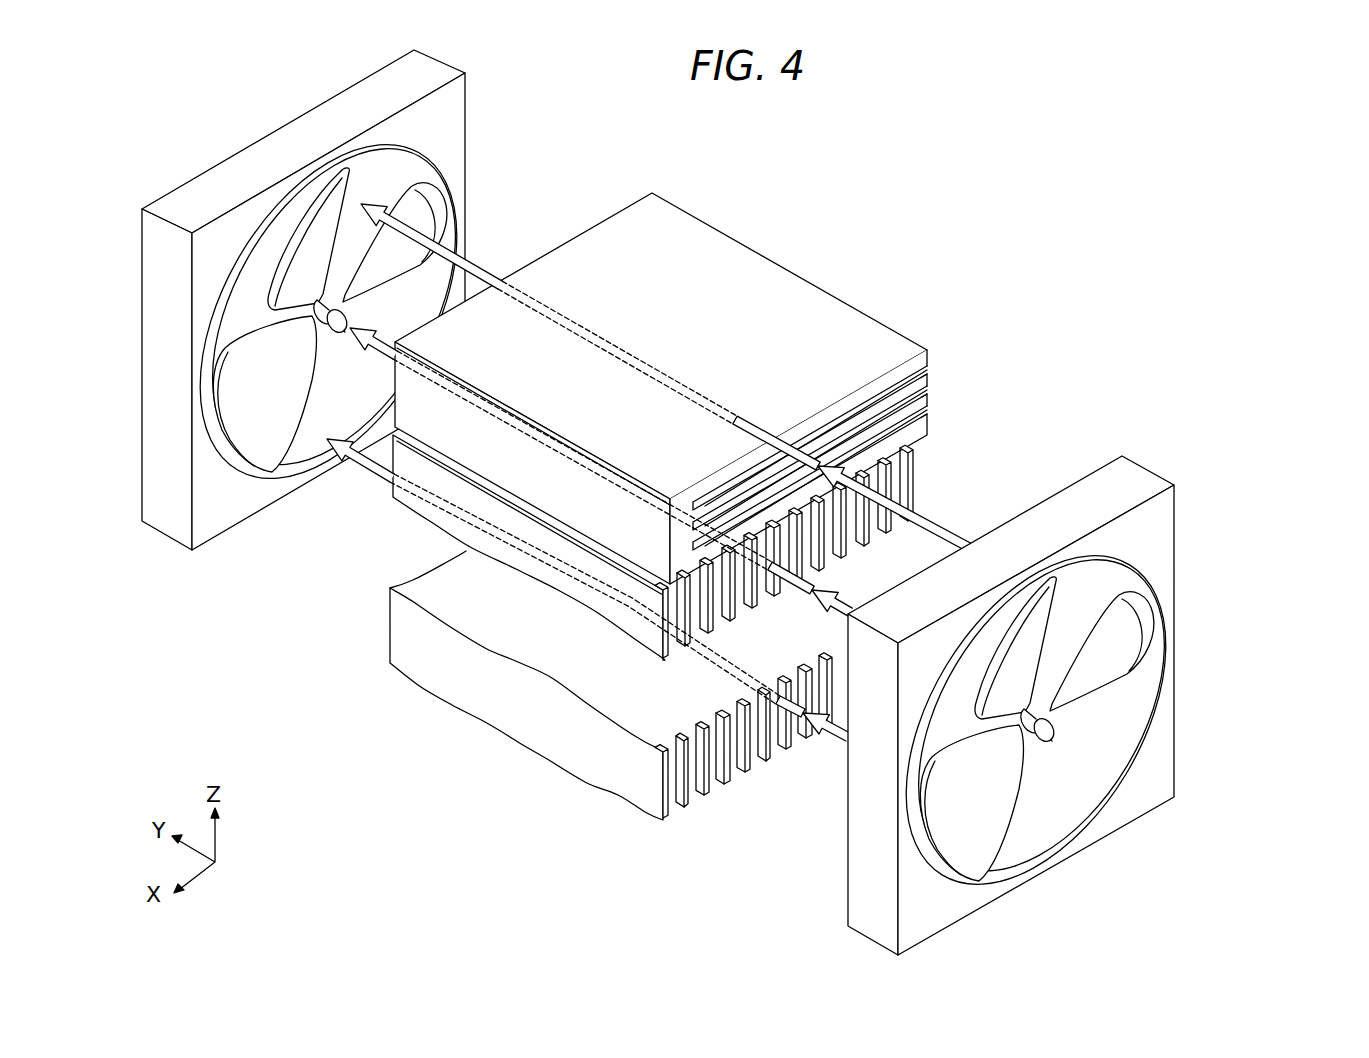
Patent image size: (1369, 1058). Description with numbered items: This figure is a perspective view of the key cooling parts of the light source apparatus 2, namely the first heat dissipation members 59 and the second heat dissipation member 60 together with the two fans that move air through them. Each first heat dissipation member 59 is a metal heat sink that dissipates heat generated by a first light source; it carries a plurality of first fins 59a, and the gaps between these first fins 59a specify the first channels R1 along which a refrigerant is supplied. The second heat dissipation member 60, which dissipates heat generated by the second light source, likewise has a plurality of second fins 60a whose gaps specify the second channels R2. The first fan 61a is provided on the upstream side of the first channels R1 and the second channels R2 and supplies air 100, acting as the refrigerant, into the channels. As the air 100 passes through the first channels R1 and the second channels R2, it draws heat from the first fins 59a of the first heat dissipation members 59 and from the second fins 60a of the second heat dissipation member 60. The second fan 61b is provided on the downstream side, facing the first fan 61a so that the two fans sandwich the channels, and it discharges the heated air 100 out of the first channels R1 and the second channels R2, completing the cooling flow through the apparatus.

The light source apparatus 2 is at (1110, 142).
The first heat dissipation member 59 is at (389, 487).
The first fins 59a is at (683, 614).
The second heat dissipation member 60 is at (835, 320).
The second fins 60a is at (913, 366).
The first fan 61a is at (1148, 535).
The second fan 61b is at (454, 118).
The air 100 is at (844, 608).
The first channels R1 is at (740, 585).
The second channels R2 is at (903, 409).